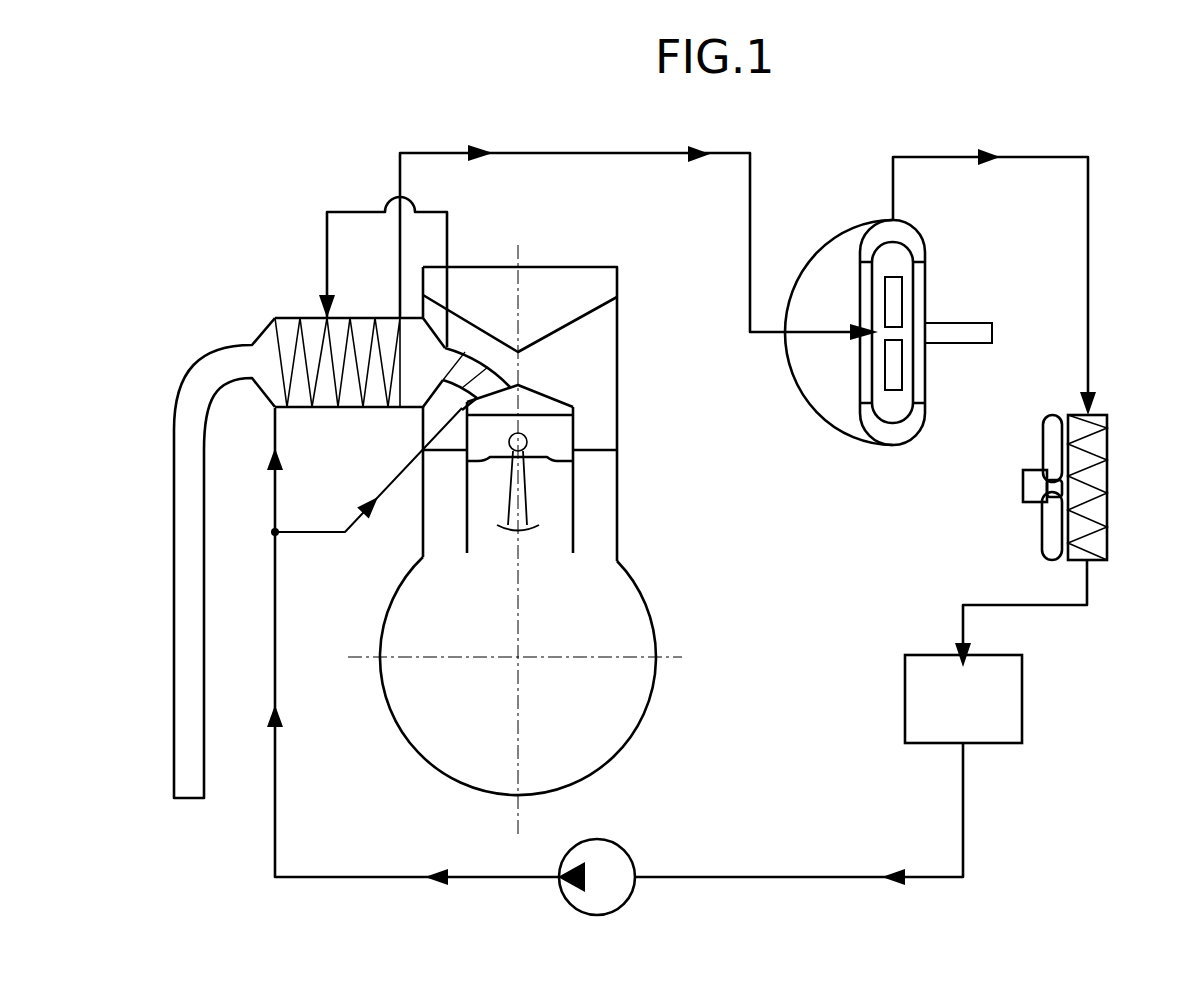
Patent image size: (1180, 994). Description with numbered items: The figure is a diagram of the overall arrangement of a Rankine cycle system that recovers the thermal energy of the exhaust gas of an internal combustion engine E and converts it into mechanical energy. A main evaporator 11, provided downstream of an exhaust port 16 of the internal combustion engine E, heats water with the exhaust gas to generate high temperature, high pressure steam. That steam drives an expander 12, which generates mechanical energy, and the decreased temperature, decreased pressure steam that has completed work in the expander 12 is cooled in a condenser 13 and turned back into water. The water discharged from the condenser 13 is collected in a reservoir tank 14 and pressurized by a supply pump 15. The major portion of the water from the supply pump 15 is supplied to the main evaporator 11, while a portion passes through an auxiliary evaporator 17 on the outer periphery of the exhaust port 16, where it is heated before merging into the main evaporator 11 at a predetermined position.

The main evaporator 11 is at (288, 316).
The expander 12 is at (825, 243).
The condenser 13 is at (1110, 510).
The reservoir tank 14 is at (1002, 743).
The supply pump 15 is at (612, 840).
The exhaust port 16 is at (478, 366).
The auxiliary evaporator 17 is at (458, 388).
The internal combustion engine E is at (403, 763).